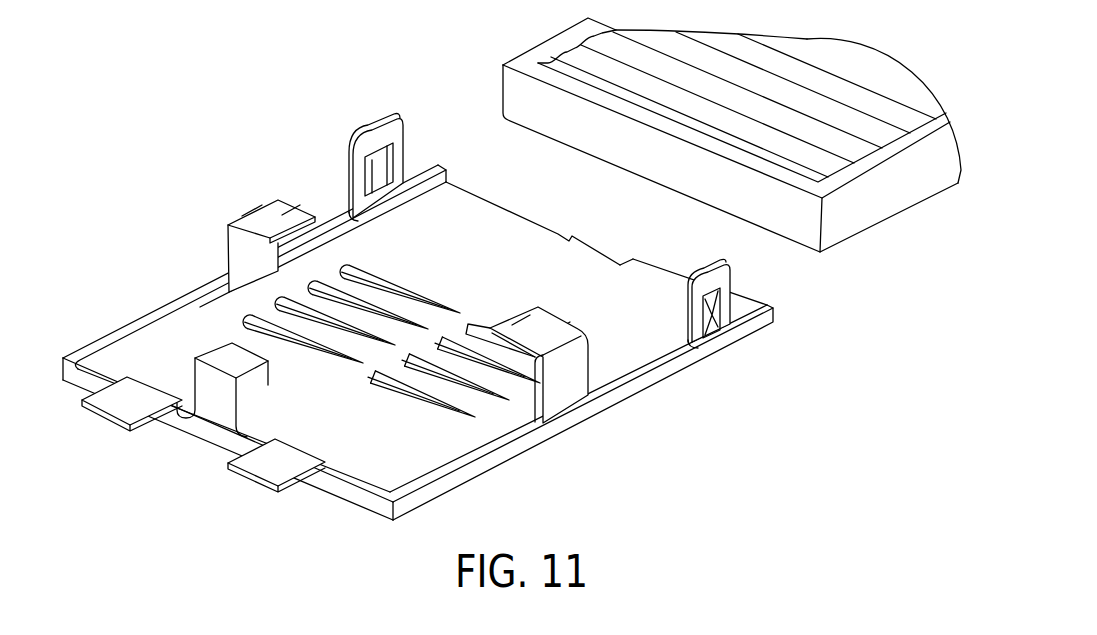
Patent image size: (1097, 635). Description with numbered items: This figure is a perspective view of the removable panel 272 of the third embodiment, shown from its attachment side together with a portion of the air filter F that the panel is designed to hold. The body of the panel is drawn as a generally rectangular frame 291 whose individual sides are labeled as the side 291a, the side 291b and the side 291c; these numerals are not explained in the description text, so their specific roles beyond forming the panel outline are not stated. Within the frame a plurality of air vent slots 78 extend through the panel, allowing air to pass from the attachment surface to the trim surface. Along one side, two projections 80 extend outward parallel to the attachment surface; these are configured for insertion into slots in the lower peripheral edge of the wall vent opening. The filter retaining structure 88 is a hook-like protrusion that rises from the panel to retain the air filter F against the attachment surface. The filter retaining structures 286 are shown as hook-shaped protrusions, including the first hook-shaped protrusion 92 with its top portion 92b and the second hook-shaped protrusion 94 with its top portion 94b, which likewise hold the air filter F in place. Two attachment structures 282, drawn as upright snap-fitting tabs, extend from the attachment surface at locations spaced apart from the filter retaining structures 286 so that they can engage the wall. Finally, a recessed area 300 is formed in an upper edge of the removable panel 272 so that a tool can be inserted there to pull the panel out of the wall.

The removable panel 272 is at (203, 168).
The frame 291 is at (657, 378).
The frame side 291a is at (567, 423).
The frame side 291b is at (137, 316).
The frame side 291c is at (353, 495).
The recessed area 300 is at (603, 257).
The projections 80 is at (120, 398).
The filter retaining structure 88 is at (228, 355).
The second hook-shaped protrusion 94 is at (233, 215).
The clip top surface 94b is at (262, 216).
The filter retaining structures 286 is at (288, 212).
The air vent slots 78 is at (397, 281).
The first hook-shaped protrusion 92 is at (569, 337).
The clip top surface 92b is at (520, 328).
The attachment structures 282 is at (378, 160).
The air filter F is at (867, 78).